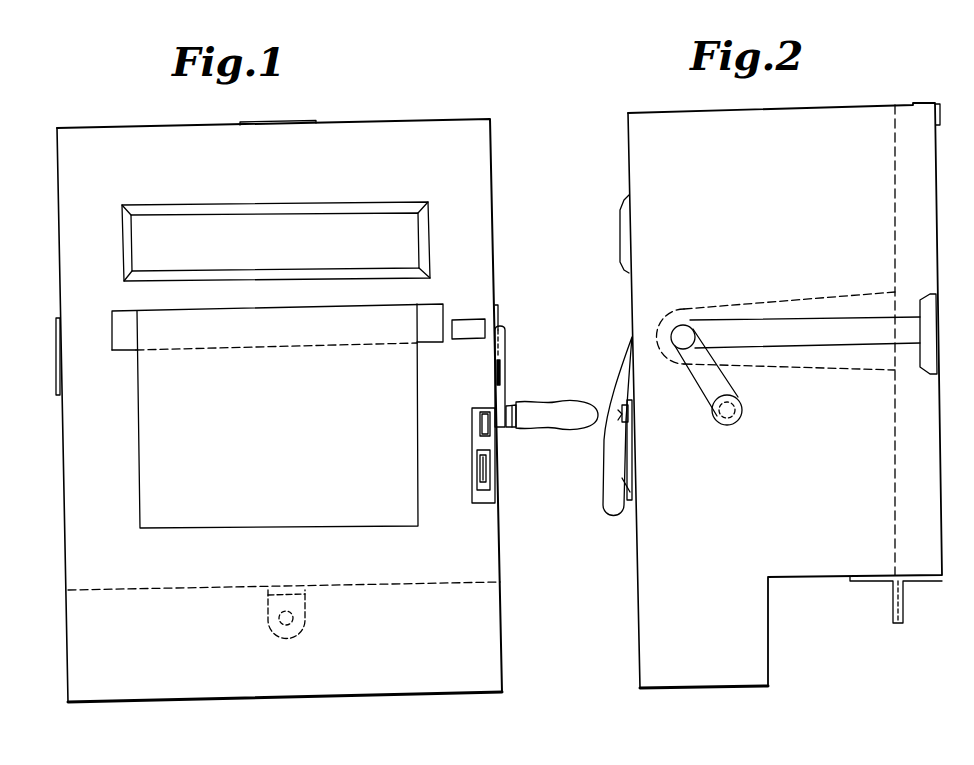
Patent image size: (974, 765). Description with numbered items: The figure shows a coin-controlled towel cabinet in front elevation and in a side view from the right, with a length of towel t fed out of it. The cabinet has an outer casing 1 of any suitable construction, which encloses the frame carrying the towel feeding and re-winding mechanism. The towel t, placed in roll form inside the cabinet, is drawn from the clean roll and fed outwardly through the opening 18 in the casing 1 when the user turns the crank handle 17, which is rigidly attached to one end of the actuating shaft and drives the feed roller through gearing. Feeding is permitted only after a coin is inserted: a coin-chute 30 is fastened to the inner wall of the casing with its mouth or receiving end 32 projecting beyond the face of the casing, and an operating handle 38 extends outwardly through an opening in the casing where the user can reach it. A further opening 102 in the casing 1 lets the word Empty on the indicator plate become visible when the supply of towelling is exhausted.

In FIG. 1, the outer casing 1 is at (70, 475).
In FIG. 2, the outer casing 1 is at (642, 545).
In FIG. 1, the opening 18 is at (120, 346).
In FIG. 1, the towel t is at (143, 426).
In FIG. 2, the towel t is at (606, 460).
In FIG. 1, the opening 102 is at (466, 330).
In FIG. 1, the crank handle 17 is at (505, 382).
In FIG. 2, the crank handle 17 is at (724, 394).
In FIG. 1, the coin-chute 30 is at (478, 446).
In FIG. 2, the coin-chute 30 is at (632, 471).
In FIG. 1, the operating handle 38 is at (480, 424).
In FIG. 2, the operating handle 38 is at (618, 426).
In FIG. 1, the mouth or receiving end 32 is at (476, 481).